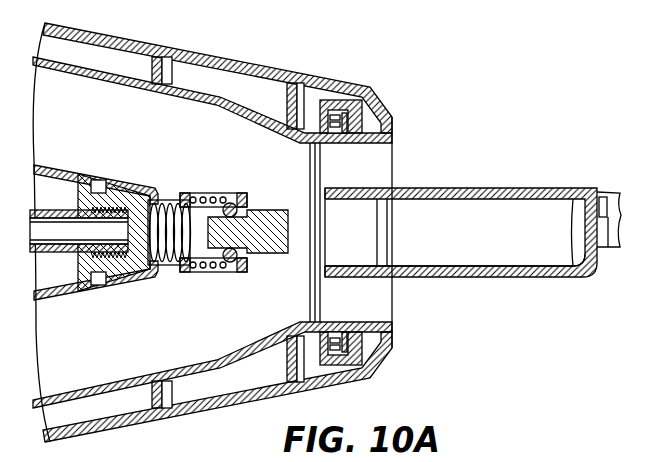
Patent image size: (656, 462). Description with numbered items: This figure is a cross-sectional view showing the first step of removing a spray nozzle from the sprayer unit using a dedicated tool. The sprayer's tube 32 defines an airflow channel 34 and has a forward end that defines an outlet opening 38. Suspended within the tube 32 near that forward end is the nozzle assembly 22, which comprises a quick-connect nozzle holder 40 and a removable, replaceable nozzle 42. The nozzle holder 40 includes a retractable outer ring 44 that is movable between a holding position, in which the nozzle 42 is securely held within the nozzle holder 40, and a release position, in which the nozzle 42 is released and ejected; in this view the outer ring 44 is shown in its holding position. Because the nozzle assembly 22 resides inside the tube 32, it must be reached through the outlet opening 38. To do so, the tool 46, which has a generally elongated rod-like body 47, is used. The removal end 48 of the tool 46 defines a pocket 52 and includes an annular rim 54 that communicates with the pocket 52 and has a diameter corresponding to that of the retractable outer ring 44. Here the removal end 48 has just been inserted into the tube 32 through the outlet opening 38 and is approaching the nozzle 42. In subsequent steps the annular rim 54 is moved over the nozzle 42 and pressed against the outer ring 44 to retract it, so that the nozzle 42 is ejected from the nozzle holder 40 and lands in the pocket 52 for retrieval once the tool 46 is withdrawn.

The nozzle assembly 22 is at (233, 140).
The tube 32 is at (230, 57).
The airflow channel 34 is at (152, 338).
The outlet opening 38 is at (396, 301).
The nozzle holder 40 is at (190, 176).
The nozzle 42 is at (267, 250).
The retractable outer ring 44 is at (193, 273).
The tool 46 is at (560, 335).
The rod-like body 47 is at (557, 190).
The removal end 48 is at (453, 186).
The pocket 52 is at (487, 233).
The annular rim 54 is at (325, 187).